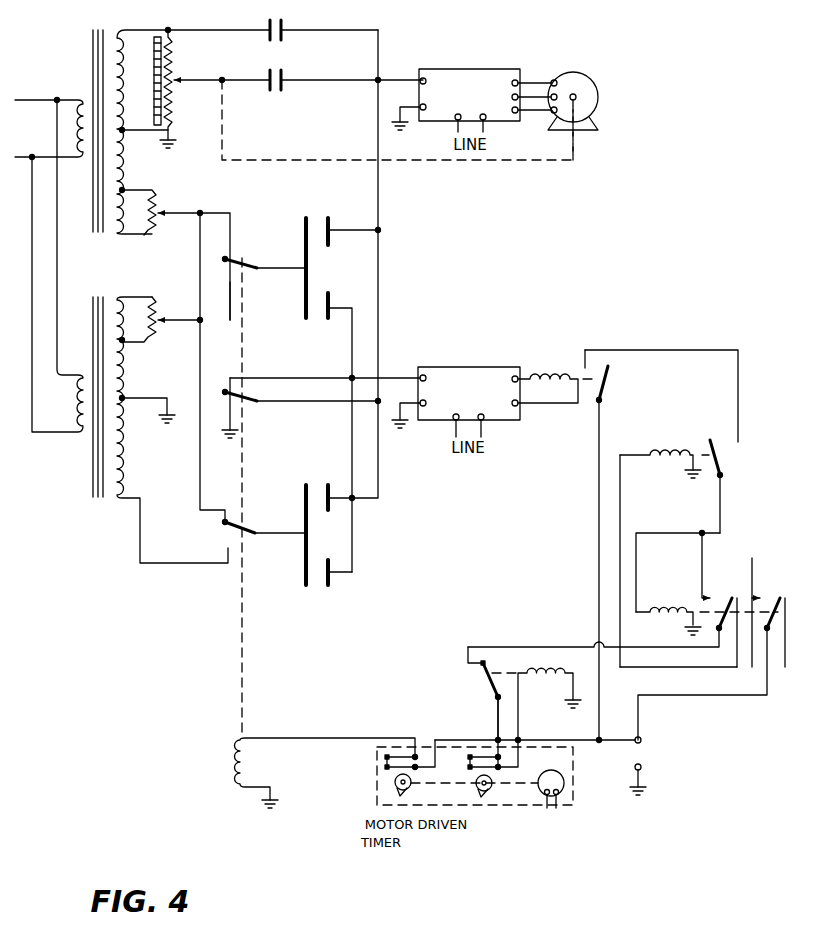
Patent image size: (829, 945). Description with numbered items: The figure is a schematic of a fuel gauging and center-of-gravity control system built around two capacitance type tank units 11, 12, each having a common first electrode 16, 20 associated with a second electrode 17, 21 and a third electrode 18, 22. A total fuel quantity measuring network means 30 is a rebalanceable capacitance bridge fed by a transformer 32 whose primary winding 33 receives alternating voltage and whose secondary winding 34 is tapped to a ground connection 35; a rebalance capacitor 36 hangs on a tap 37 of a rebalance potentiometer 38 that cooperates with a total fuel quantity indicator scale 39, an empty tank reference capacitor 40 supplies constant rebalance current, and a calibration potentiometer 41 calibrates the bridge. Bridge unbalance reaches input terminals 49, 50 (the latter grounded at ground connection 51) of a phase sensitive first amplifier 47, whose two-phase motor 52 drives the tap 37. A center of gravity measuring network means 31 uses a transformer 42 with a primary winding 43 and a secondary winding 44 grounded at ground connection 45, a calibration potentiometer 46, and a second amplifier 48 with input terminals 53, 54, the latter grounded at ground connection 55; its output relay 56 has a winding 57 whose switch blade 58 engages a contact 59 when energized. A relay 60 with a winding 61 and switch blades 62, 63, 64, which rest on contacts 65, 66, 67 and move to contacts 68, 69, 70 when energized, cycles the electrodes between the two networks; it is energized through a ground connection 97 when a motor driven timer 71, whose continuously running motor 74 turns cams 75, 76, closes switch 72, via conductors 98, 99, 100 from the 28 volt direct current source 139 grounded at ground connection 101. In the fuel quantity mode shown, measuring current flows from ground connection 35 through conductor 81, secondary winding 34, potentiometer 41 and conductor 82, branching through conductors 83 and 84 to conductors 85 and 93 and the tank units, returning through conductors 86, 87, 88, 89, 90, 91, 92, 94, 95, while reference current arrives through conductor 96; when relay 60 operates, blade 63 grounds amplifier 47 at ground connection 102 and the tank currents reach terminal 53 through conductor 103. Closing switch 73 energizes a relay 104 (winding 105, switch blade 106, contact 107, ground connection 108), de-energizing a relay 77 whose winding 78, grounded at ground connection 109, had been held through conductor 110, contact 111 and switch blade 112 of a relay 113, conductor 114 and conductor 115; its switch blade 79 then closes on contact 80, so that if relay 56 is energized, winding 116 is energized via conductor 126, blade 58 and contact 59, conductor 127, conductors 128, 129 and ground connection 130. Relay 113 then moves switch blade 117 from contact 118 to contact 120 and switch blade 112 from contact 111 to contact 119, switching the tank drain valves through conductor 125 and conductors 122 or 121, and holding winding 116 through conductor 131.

The tank unit 11 is at (300, 213).
The tank unit 12 is at (303, 480).
The first electrode 16 is at (303, 250).
The second electrode 17 is at (332, 226).
The third electrode 18 is at (332, 304).
The first electrode 20 is at (303, 516).
The second electrode 21 is at (331, 492).
The third electrode 22 is at (331, 568).
The 28 volt DC supply 28 is at (679, 757).
The total fuel quantity measuring network means 30 is at (418, 192).
The center of gravity measuring network means 31 is at (406, 338).
The transformer 32 is at (82, 50).
The primary winding 33 is at (49, 136).
The secondary winding 34 is at (132, 158).
The ground connection 35 is at (178, 143).
The rebalance capacitor 36 is at (286, 80).
The tap 37 is at (184, 80).
The rebalance potentiometer 38 is at (178, 55).
The total fuel quantity indicator scale 39 is at (154, 78).
The empty tank reference capacitor 40 is at (287, 28).
The calibration potentiometer 41 is at (165, 203).
The transformer 42 is at (80, 322).
The primary winding 43 is at (68, 398).
The secondary winding 44 is at (131, 357).
The ground connection 45 is at (168, 414).
The calibration potentiometer 46 is at (160, 312).
The first amplifier 47 is at (468, 69).
The second amplifier 48 is at (494, 367).
The input terminal 49 is at (428, 84).
The input terminal 50 is at (427, 108).
The ground connection 51 is at (406, 126).
The two-phase motor 52 is at (595, 82).
The first input terminal 53 is at (427, 383).
The second input terminal 54 is at (427, 405).
The ground connection 55 is at (406, 426).
The relay 56 is at (555, 372).
The winding 57 is at (538, 380).
The switch blade 58 is at (610, 374).
The contact 59 is at (590, 366).
The relay 60 is at (233, 762).
The winding 61 is at (250, 763).
The switch blade 62 is at (250, 522).
The switch blade 63 is at (251, 396).
The switch blade 64 is at (252, 262).
The contact 65 is at (227, 519).
The contact 66 is at (227, 389).
The contact 67 is at (227, 256).
The contact 68 is at (228, 548).
The contact 69 is at (230, 410).
The contact 70 is at (230, 282).
The motor driven timer 71 is at (504, 796).
The switch 72 is at (384, 762).
The switch 73 is at (468, 768).
The motor 74 is at (565, 781).
The cam 75 is at (477, 788).
The cam 76 is at (413, 790).
The relay 77 is at (670, 446).
The winding 78 is at (664, 460).
The switch blade 79 is at (723, 462).
The contact 80 is at (738, 442).
The conductor 81 is at (142, 132).
The conductor 82 is at (200, 212).
The conductor 83 is at (232, 218).
The conductor 84 is at (200, 452).
The conductor 85 is at (280, 270).
The conductor 86 is at (350, 232).
The conductor 87 is at (378, 195).
The conductor 88 is at (383, 80).
The conductor 89 is at (353, 325).
The conductor 90 is at (296, 378).
The conductor 91 is at (298, 401).
The conductor 92 is at (378, 298).
The conductor 93 is at (276, 535).
The conductor 94 is at (380, 480).
The conductor 95 is at (354, 530).
The conductor 96 is at (378, 30).
The ground connection 97 is at (275, 800).
The conductor 98 is at (476, 738).
The conductor 99 is at (556, 738).
The conductor 100 is at (620, 740).
The ground connection 101 is at (646, 787).
The ground connection 102 is at (222, 438).
The conductor 103 is at (394, 378).
The relay 104 is at (555, 684).
The winding 105 is at (553, 664).
The switch blade 106 is at (490, 680).
The contact 107 is at (485, 663).
The ground connection 108 is at (582, 704).
The ground connection 109 is at (688, 484).
The conductor 110 is at (620, 501).
The contact 111 is at (737, 590).
The switch blade 112 is at (720, 600).
The relay 113 is at (669, 597).
The conductor 114 is at (628, 648).
The conductor 115 is at (497, 712).
The winding 116 is at (686, 610).
The switch blade 117 is at (771, 598).
The contact 118 is at (784, 600).
The contact 119 is at (703, 590).
The contact 120 is at (756, 568).
The conductor 121 is at (752, 667).
The conductor 122 is at (785, 667).
The conductor 125 is at (713, 695).
The conductor 126 is at (599, 537).
The conductor 127 is at (700, 350).
The conductor 128 is at (722, 505).
The conductor 129 is at (666, 533).
The ground connection 130 is at (690, 628).
The conductor 131 is at (702, 560).
The 28 volt direct current source 139 is at (664, 754).